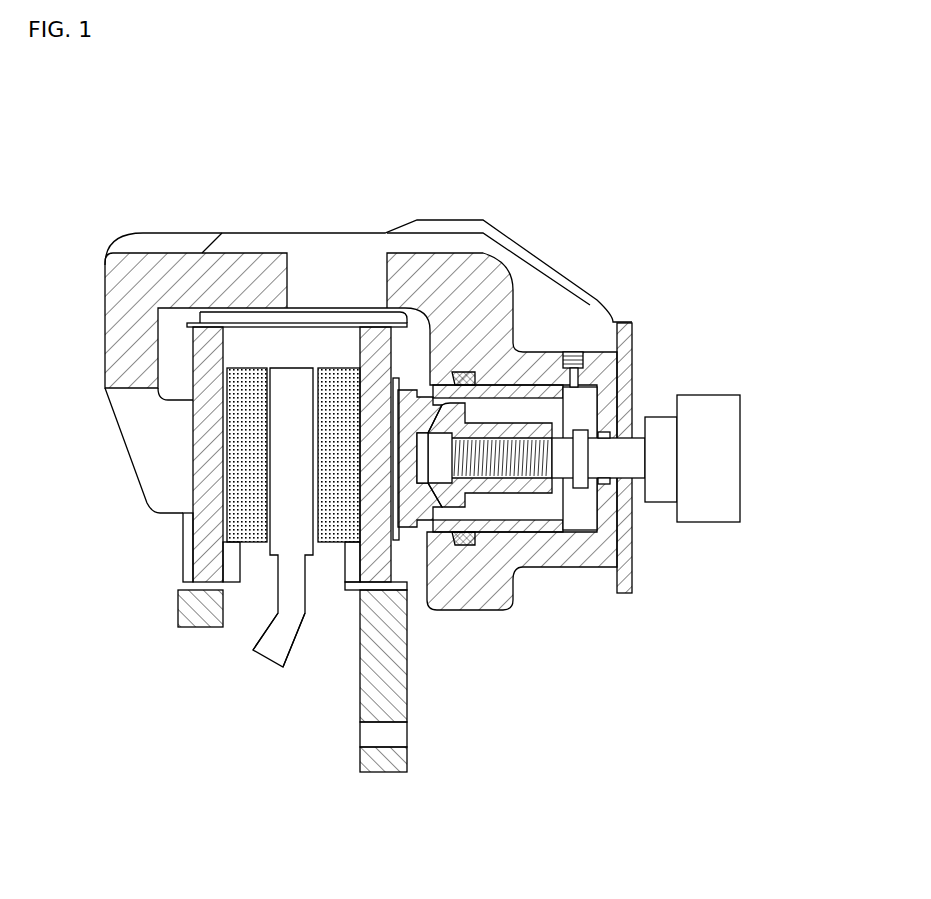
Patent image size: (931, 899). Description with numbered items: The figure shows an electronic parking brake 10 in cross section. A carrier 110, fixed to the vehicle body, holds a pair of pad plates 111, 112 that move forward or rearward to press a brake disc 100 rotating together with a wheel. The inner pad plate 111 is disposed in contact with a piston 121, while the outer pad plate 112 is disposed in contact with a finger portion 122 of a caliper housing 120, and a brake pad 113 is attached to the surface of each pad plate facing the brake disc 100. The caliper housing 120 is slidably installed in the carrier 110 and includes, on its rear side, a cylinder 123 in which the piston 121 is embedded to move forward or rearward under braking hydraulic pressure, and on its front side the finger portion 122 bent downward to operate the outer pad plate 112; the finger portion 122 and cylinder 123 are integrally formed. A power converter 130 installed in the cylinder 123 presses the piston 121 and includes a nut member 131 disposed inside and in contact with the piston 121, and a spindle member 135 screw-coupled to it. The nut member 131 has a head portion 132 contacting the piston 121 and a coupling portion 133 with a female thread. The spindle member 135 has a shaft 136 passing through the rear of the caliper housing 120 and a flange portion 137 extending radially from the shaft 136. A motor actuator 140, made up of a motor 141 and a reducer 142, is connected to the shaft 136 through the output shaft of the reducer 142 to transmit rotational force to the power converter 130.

The electronic parking brake 10 is at (408, 132).
The brake disc 100 is at (284, 645).
The carrier 110 is at (370, 705).
The inner pad plate 111 is at (370, 567).
The outer pad plate 112 is at (203, 538).
The brake pad 113 is at (250, 542).
The caliper housing 120 is at (279, 252).
The piston 121 is at (405, 510).
The finger portion 122 is at (130, 432).
The cylinder 123 is at (628, 321).
The power converter 130 is at (523, 410).
The nut member 131 is at (475, 563).
The head portion 132 is at (450, 515).
The coupling portion 133 is at (510, 490).
The spindle member 135 is at (607, 567).
The shaft 136 is at (603, 467).
The flange portion 137 is at (578, 475).
The motor actuator 140 is at (688, 417).
The motor 141 is at (708, 438).
The reducer 142 is at (667, 418).